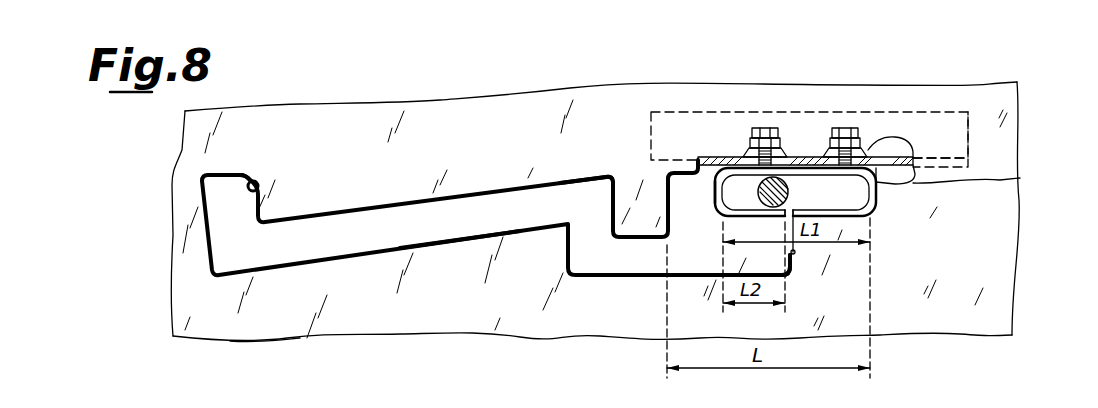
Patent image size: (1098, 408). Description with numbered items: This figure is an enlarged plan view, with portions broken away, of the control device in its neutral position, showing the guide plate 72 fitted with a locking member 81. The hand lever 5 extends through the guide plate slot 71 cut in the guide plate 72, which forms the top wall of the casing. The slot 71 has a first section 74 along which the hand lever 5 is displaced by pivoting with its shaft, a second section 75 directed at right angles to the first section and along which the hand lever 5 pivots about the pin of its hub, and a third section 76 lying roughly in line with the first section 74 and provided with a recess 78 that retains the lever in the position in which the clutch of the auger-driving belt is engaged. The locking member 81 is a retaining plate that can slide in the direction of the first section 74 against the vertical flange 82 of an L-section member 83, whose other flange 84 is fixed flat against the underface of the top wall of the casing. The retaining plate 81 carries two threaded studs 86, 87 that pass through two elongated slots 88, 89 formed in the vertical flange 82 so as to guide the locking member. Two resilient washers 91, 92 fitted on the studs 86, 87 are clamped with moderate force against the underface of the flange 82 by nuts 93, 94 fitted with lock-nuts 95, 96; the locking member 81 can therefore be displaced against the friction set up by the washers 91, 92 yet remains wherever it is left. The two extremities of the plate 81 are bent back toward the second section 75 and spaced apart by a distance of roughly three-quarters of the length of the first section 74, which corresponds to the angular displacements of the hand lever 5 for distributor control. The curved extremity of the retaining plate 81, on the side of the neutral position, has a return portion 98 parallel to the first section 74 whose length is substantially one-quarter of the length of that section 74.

The hand lever 5 is at (790, 195).
The guide plate slot 71 is at (418, 206).
The guide plate 72 is at (287, 337).
The first section of the slot 74 is at (658, 183).
The second section of the slot 75 is at (794, 253).
The third section of the slot 76 is at (466, 237).
The recess 78 is at (250, 178).
The locking member 81 is at (712, 201).
The vertical flange 82 is at (1020, 178).
The L-section member 83 is at (980, 120).
The other flange 84 is at (960, 112).
The threaded stud 86 is at (852, 148).
The threaded stud 87 is at (778, 128).
The elongated slot 88 is at (917, 139).
The elongated slot 89 is at (842, 128).
The resilient washer 91 is at (880, 150).
The resilient washer 92 is at (745, 152).
The nut 93 is at (872, 160).
The nut 94 is at (752, 140).
The lock-nut 95 is at (866, 152).
The lock-nut 96 is at (762, 128).
The return portion 98 is at (785, 219).